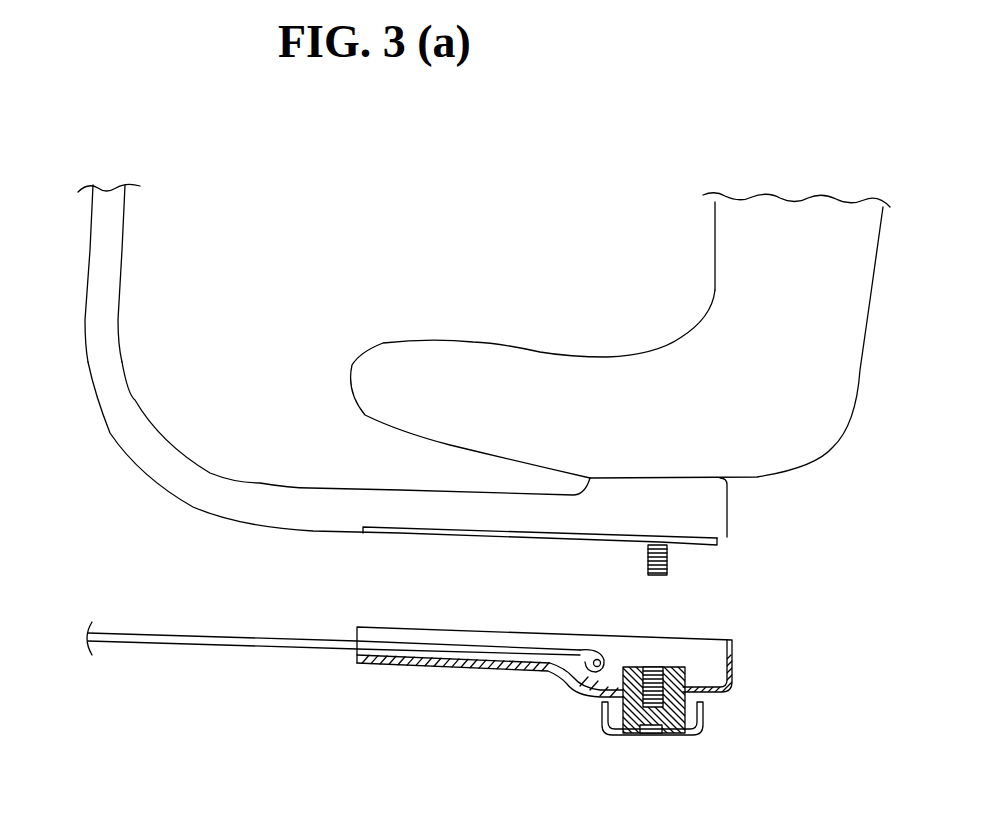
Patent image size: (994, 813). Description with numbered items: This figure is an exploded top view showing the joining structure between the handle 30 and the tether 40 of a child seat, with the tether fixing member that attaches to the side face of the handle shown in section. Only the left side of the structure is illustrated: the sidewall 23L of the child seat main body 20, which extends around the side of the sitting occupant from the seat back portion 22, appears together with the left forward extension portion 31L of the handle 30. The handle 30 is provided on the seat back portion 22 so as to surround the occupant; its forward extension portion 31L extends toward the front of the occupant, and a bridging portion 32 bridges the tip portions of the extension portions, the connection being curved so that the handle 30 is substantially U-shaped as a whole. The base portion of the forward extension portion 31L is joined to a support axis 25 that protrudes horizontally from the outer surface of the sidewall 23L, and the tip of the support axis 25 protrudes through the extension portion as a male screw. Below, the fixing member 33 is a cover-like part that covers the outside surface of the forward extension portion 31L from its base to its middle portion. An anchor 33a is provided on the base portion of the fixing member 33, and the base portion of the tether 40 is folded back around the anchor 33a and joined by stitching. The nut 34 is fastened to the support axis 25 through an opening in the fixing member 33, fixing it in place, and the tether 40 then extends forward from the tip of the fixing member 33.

The child seat main body 20 is at (620, 388).
The seat back portion 22 is at (713, 238).
The sidewall 23L is at (471, 340).
The support axis 25 is at (668, 563).
The handle 30 is at (397, 386).
The forward extension portion 31L is at (320, 518).
The bridging portion 32 is at (110, 268).
The fixing member 33 is at (558, 666).
The anchor 33a is at (600, 655).
The nut 34 is at (673, 735).
The tether 40 is at (190, 648).